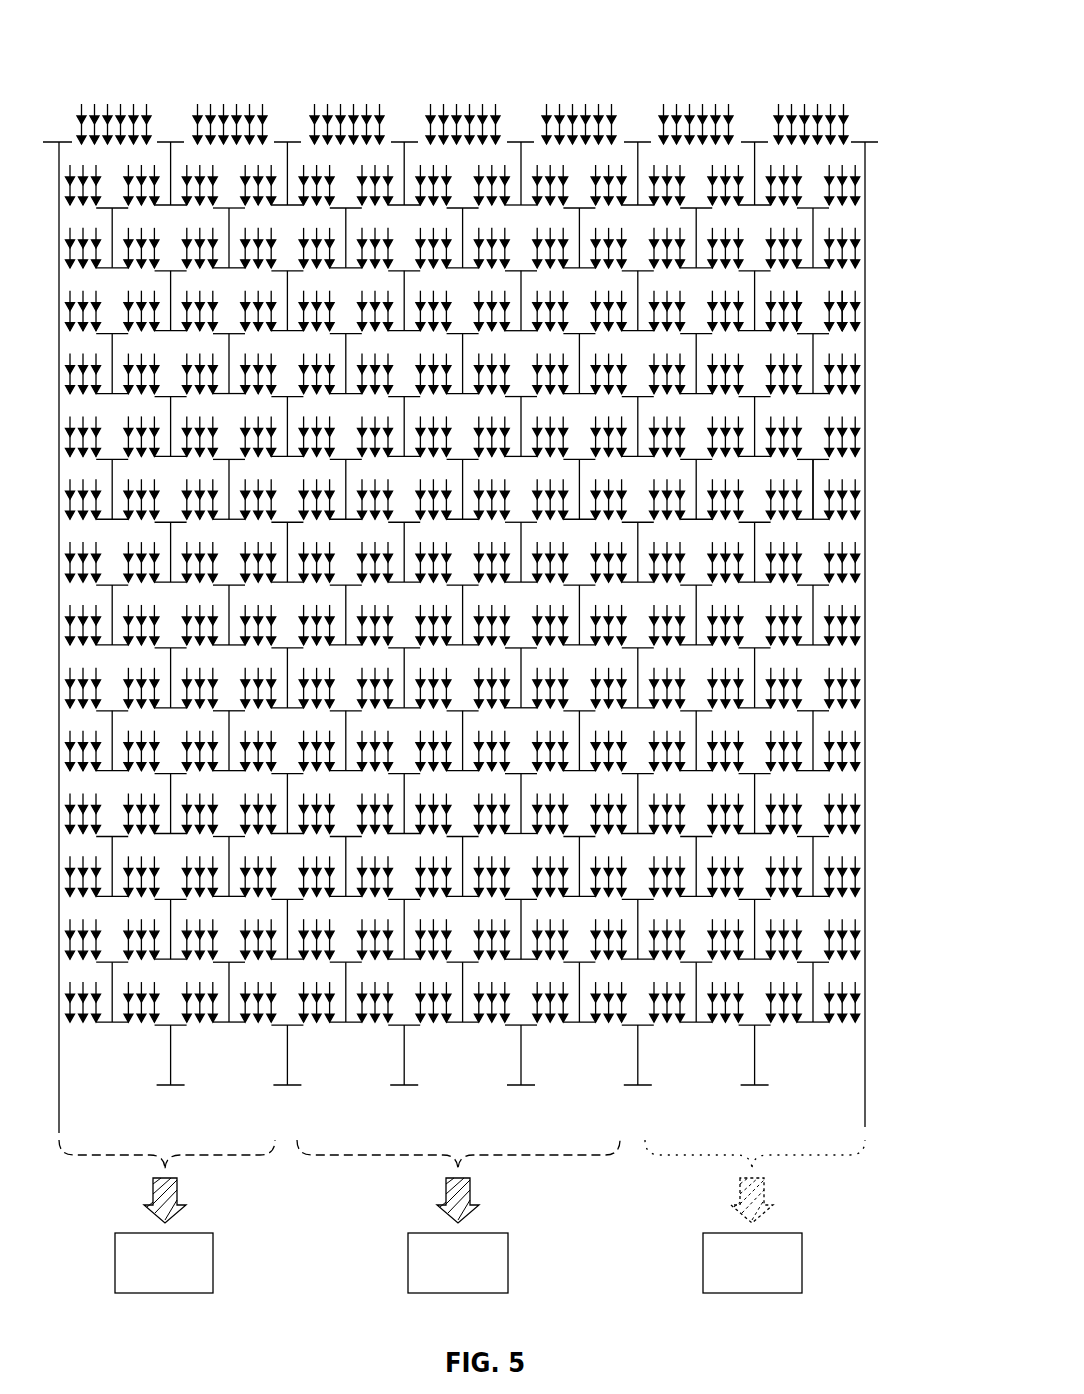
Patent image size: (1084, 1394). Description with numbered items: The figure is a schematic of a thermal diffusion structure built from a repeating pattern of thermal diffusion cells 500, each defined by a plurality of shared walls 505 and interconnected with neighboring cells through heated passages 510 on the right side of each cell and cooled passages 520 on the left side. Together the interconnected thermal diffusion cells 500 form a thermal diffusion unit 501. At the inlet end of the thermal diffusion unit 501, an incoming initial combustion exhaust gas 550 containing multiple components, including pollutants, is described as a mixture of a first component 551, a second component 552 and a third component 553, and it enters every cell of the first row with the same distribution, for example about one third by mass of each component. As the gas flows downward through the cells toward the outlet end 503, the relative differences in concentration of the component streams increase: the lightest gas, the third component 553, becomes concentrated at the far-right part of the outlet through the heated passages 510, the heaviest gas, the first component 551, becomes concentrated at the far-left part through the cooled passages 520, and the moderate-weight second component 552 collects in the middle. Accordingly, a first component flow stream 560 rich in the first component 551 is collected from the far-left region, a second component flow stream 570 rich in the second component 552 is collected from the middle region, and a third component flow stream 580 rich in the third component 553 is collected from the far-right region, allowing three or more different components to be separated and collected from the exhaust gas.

The thermal diffusion unit 501 is at (861, 56).
The thermal diffusion cell 500 is at (816, 154).
The outlet end 503 is at (879, 1088).
The shared wall 505 is at (815, 477).
The heated passage 510 is at (849, 338).
The cooled passage 520 is at (804, 310).
The initial combustion exhaust gas 550 is at (153, 95).
The first component 551 is at (312, 109).
The second component 552 is at (353, 108).
The third component 553 is at (383, 109).
The first component flow stream 560 is at (187, 1277).
The second component flow stream 570 is at (481, 1277).
The third component flow stream 580 is at (775, 1277).